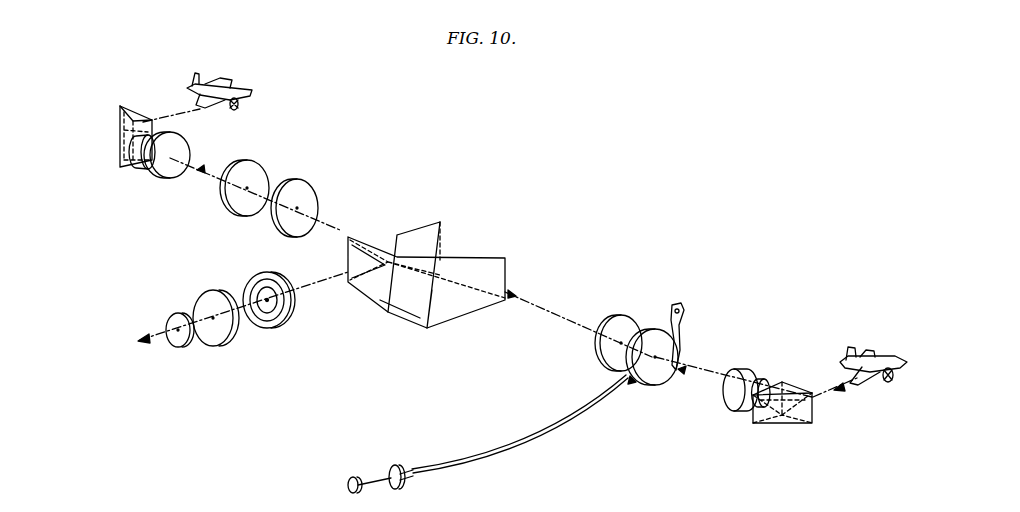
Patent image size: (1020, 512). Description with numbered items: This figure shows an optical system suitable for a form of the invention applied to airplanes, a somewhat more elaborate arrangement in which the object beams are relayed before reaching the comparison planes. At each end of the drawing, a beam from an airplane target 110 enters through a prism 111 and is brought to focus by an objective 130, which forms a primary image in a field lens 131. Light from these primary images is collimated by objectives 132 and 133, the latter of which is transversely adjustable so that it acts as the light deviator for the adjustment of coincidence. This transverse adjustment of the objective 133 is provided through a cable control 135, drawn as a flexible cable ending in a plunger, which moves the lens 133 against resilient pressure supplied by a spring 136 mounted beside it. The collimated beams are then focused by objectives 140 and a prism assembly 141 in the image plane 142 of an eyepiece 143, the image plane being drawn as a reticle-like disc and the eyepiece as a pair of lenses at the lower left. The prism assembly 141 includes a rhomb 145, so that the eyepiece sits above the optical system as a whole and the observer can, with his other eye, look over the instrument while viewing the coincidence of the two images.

The target aircraft 110 is at (255, 92).
The prism 111 is at (134, 110).
The objective 130 is at (141, 168).
The field lens 131 is at (181, 148).
The objective 132 is at (258, 172).
The objective 133 is at (652, 376).
The cable control 135 is at (458, 468).
The spring 136 is at (681, 323).
The objective 140 is at (308, 192).
The prism assembly 141 is at (453, 258).
The image plane 142 is at (273, 330).
The eyepiece 143 is at (182, 343).
The rhomb 145 is at (418, 315).